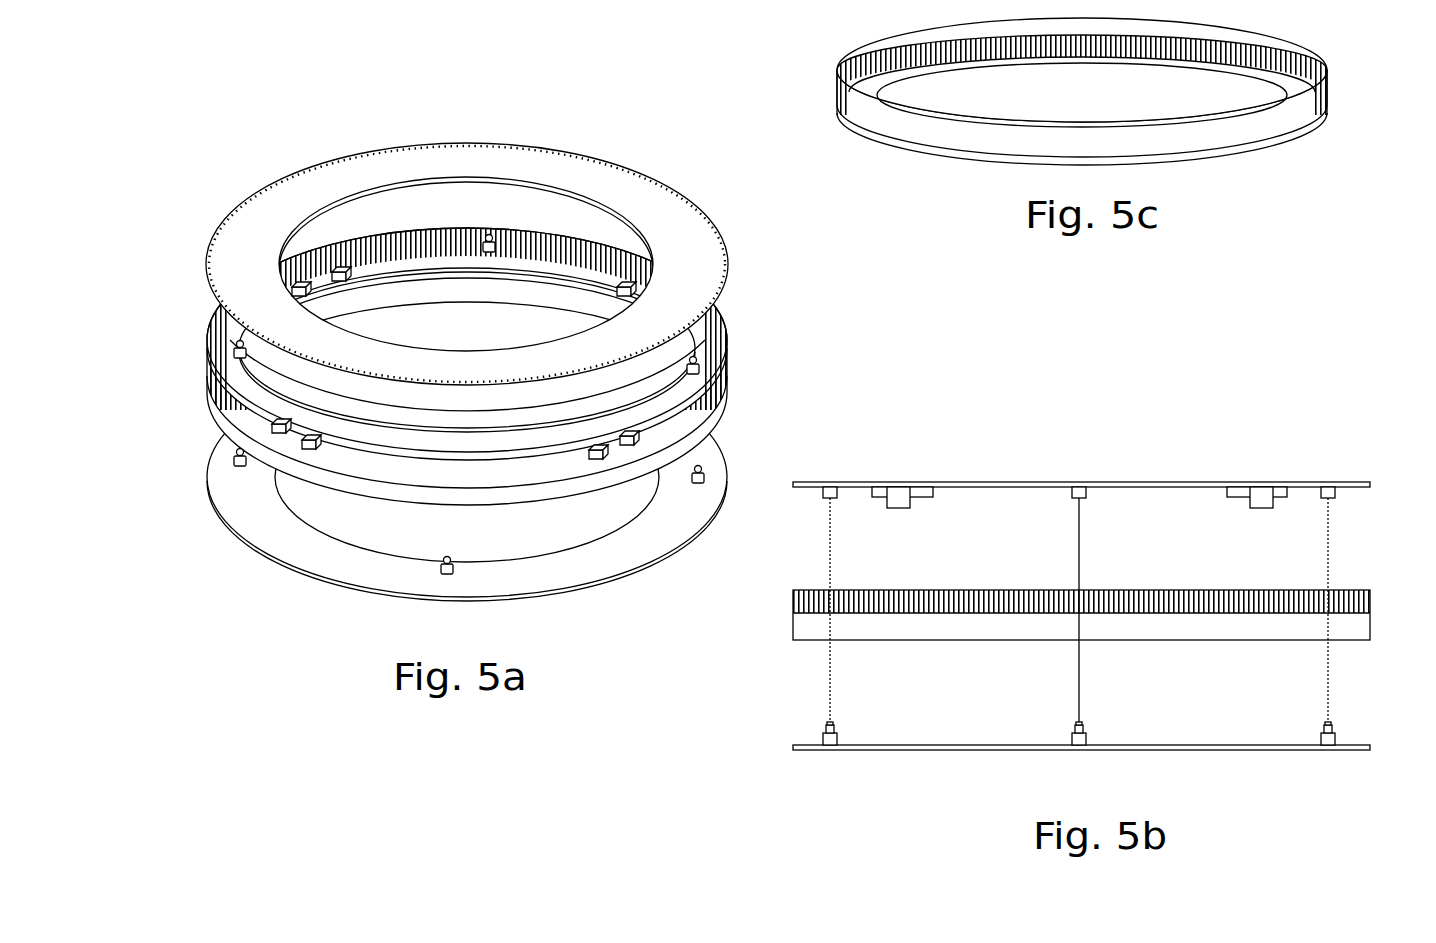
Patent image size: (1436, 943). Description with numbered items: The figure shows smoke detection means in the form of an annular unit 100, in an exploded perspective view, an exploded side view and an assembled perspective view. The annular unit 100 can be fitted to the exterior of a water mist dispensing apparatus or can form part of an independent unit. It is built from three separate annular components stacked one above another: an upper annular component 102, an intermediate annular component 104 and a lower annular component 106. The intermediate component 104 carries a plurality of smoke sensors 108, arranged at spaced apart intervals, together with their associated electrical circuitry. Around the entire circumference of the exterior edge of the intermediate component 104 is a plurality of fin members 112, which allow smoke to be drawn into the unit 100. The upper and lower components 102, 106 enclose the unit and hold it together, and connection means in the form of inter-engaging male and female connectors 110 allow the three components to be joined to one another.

In FIG. 5A, the annular unit 100 is at (491, 355).
In FIG. 5A, the upper annular component 102 is at (530, 165).
In FIG. 5B, the upper annular component 102 is at (979, 483).
In FIG. 5C, the upper annular component 102 is at (862, 58).
In FIG. 5A, the intermediate annular component 104 is at (513, 366).
In FIG. 5B, the intermediate annular component 104 is at (1071, 620).
In FIG. 5C, the intermediate annular component 104 is at (1078, 79).
In FIG. 5A, the lower annular component 106 is at (658, 536).
In FIG. 5B, the lower annular component 106 is at (1353, 753).
In FIG. 5C, the lower annular component 106 is at (862, 116).
In FIG. 5A, the smoke sensors 108 is at (268, 438).
In FIG. 5B, the smoke sensors 108 is at (1079, 497).
In FIG. 5A, the male and female connectors 110 is at (233, 360).
In FIG. 5B, the male and female connectors 110 is at (833, 483).
In FIG. 5A, the fin members 112 is at (732, 350).
In FIG. 5B, the fin members 112 is at (817, 588).
In FIG. 5C, the fin members 112 is at (1324, 78).